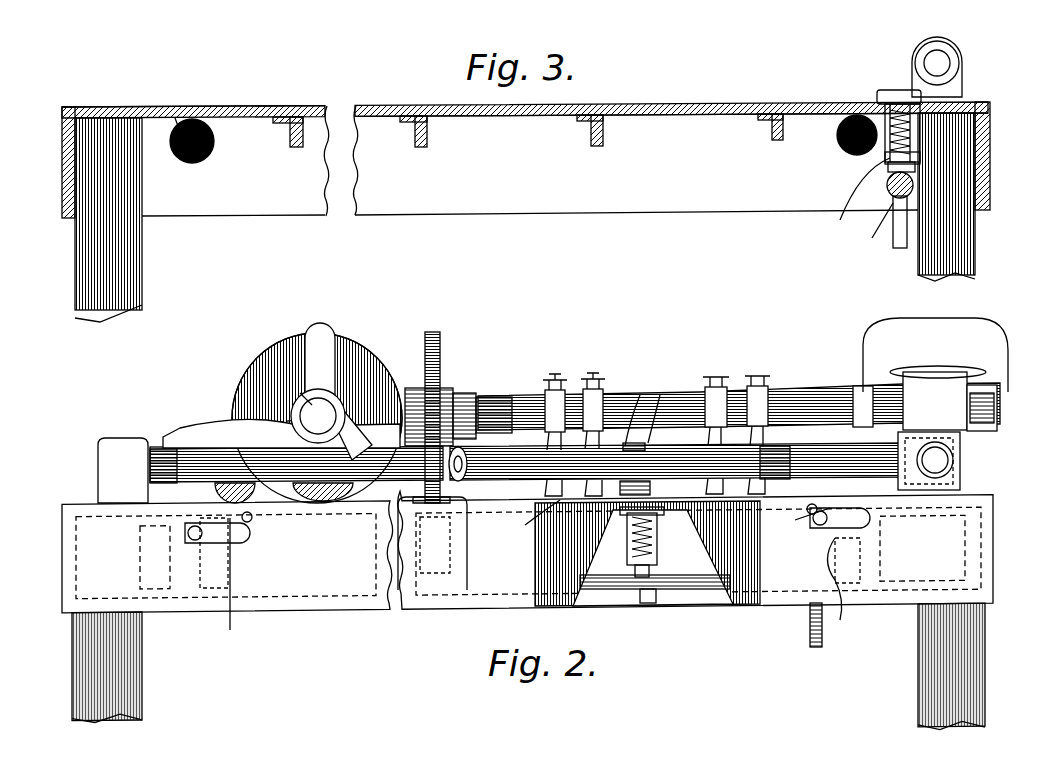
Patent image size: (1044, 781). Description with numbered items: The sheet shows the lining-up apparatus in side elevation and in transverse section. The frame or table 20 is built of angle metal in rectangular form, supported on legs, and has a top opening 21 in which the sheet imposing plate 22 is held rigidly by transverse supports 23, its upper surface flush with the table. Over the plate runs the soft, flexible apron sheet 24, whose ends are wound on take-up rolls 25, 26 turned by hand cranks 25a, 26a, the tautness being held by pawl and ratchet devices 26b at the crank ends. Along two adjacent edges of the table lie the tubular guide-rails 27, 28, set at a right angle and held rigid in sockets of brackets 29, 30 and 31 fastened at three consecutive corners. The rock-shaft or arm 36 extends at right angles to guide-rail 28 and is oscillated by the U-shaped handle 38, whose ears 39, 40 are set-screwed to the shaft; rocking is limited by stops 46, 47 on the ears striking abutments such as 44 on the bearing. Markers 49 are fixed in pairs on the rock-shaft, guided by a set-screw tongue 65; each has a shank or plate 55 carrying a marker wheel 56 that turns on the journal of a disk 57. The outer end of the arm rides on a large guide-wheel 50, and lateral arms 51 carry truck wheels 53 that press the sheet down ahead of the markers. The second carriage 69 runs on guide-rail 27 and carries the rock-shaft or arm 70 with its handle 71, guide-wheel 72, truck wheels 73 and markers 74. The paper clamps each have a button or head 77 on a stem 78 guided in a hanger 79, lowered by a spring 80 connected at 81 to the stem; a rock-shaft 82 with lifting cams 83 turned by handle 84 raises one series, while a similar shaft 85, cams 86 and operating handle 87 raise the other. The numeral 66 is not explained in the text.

In FIG. 3, the frame or table 20 is at (515, 212).
In FIG. 3, the top opening 21 is at (165, 109).
In FIG. 3, the sheet imposing plate 22 is at (510, 117).
In FIG. 3, the transverse supports 23 is at (418, 147).
In FIG. 3, the apron sheet 24 is at (645, 97).
In FIG. 3, the take-up roll 25 is at (195, 164).
In FIG. 3, the take-up roll 26 is at (855, 155).
In FIG. 2, the guide-rail 27 is at (650, 432).
In FIG. 3, the guide-rail 28 is at (960, 64).
In FIG. 2, the guide-rail 28 is at (953, 462).
In FIG. 2, the bracket 29 is at (98, 470).
In FIG. 2, the bracket 30 is at (962, 484).
In FIG. 2, the bracket 31 is at (855, 440).
In FIG. 2, the rock-shaft or arm 36 is at (815, 380).
In FIG. 2, the handle 38 is at (978, 328).
In FIG. 2, the ear 39 is at (870, 400).
In FIG. 2, the ear 40 is at (997, 415).
In FIG. 2, the abutment 44 is at (990, 405).
In FIG. 2, the stop 46 is at (412, 388).
In FIG. 2, the stop 47 is at (300, 393).
In FIG. 2, the marker 49 is at (745, 378).
In FIG. 2, the guide-wheel 50 is at (442, 342).
In FIG. 2, the lateral arm 51 is at (490, 408).
In FIG. 2, the truck wheel 53 is at (645, 393).
In FIG. 2, the shank or plate 55 is at (610, 445).
In FIG. 2, the marker wheel 56 is at (660, 520).
In FIG. 2, the disk 57 is at (943, 378).
In FIG. 2, the tongue 65 is at (594, 378).
In FIG. 2, the bracket 66 is at (648, 603).
In FIG. 2, the carriage 69 is at (215, 428).
In FIG. 2, the rock-shaft or arm 70 is at (325, 405).
In FIG. 2, the handle 71 is at (320, 330).
In FIG. 2, the guide-wheel 72 is at (262, 375).
In FIG. 2, the truck wheel 73 is at (250, 505).
In FIG. 2, the marker 74 is at (310, 502).
In FIG. 3, the button or head 77 is at (900, 73).
In FIG. 2, the button or head 77 is at (447, 543).
In FIG. 3, the stem 78 is at (912, 170).
In FIG. 2, the stem 78 is at (683, 590).
In FIG. 3, the hanger 79 is at (905, 148).
In FIG. 2, the hanger 79 is at (657, 540).
In FIG. 3, the spring 80 is at (855, 199).
In FIG. 2, the spring 80 is at (632, 545).
In FIG. 3, the spring connection 81 is at (905, 162).
In FIG. 2, the spring connection 81 is at (655, 560).
In FIG. 3, the rock-shaft 82 is at (876, 231).
In FIG. 3, the lifting cam 83 is at (887, 189).
In FIG. 3, the handle 84 is at (898, 248).
In FIG. 2, the shaft 85 is at (623, 589).
In FIG. 2, the cam 86 is at (433, 598).
In FIG. 2, the operating handle 87 is at (810, 634).
In FIG. 2, the hand crank 25a is at (229, 587).
In FIG. 2, the hand crank 26a is at (840, 620).
In FIG. 2, the pawl and ratchet device 26b is at (850, 513).